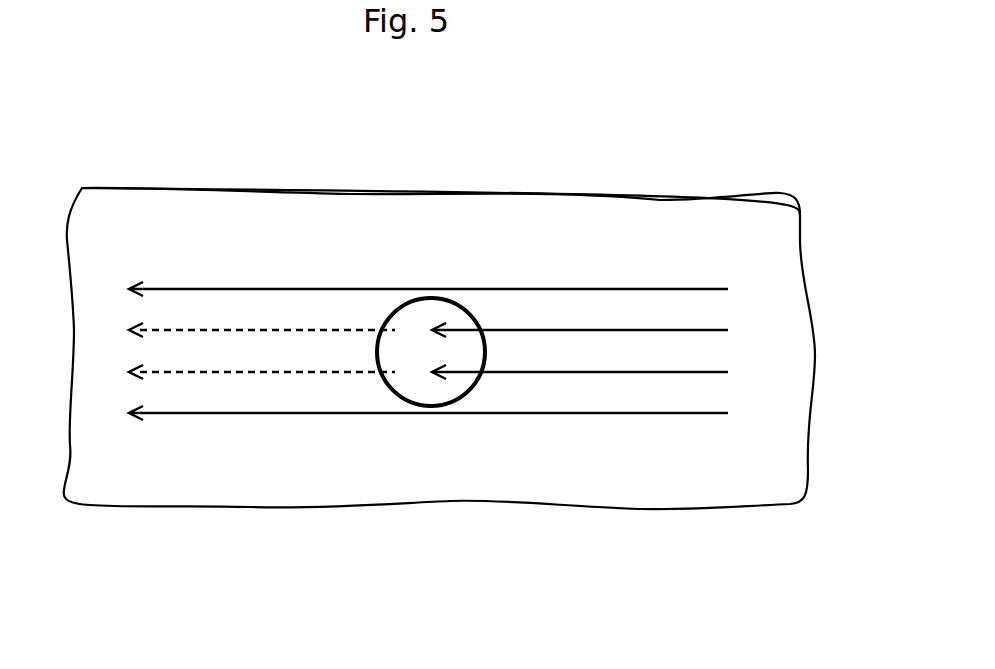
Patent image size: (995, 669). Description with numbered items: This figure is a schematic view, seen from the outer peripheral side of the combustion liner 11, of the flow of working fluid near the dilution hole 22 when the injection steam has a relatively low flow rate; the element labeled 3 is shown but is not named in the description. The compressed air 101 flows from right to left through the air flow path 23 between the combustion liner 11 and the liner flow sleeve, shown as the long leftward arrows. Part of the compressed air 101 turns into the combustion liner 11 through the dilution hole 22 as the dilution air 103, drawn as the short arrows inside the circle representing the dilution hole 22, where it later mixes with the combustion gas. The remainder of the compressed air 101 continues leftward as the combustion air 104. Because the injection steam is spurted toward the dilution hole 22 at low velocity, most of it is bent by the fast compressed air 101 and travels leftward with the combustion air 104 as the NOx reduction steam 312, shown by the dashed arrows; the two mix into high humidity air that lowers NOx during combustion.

The workpiece 3 is at (757, 170).
The combustion liner 11 is at (547, 228).
The air flow path 23 is at (469, 250).
The combustion air 104 is at (179, 287).
The NOx reduction steam 312 is at (266, 328).
The compressed air 101 is at (712, 332).
The dilution air 103 is at (462, 325).
The dilution hole 22 is at (405, 396).